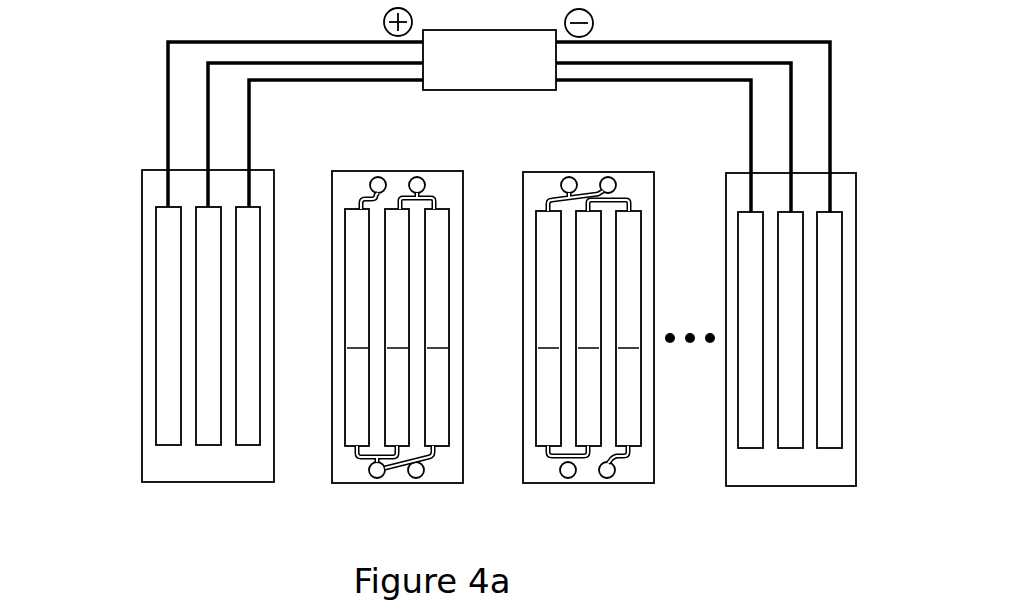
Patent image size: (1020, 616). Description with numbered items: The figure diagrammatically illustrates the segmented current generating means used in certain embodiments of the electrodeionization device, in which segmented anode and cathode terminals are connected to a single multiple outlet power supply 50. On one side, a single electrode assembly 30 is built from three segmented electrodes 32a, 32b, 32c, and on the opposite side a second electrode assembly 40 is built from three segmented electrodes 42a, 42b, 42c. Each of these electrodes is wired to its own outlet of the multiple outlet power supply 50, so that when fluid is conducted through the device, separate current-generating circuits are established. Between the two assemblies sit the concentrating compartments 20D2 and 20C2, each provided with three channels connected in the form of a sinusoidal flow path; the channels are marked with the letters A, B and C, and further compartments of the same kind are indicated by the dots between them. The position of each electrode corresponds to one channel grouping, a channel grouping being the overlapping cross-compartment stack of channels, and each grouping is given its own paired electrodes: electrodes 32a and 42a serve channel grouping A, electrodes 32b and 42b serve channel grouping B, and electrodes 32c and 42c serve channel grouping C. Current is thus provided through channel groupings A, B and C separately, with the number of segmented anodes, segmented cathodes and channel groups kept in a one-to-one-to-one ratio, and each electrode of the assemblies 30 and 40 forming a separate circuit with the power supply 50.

The multiple outlet power supply 50 is at (478, 76).
The anode assembly 30 is at (128, 411).
The segmented electrode 32a is at (163, 281).
The segmented electrode 32b is at (205, 366).
The segmented electrode 32c is at (249, 305).
The concentrating compartment 20D2 is at (346, 160).
The concentrating compartment 20C2 is at (607, 160).
The cathode assembly 40 is at (713, 388).
The segmented electrode 42a is at (751, 246).
The segmented electrode 42b is at (789, 233).
The segmented electrode 42c is at (827, 241).